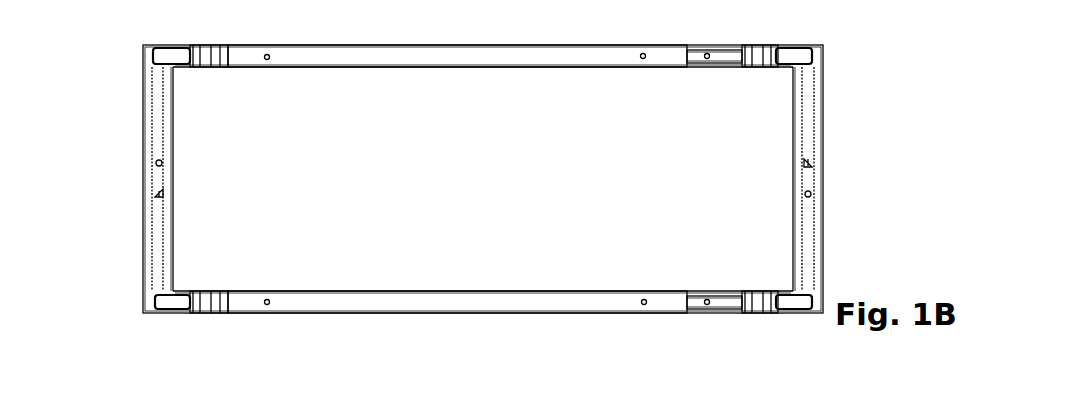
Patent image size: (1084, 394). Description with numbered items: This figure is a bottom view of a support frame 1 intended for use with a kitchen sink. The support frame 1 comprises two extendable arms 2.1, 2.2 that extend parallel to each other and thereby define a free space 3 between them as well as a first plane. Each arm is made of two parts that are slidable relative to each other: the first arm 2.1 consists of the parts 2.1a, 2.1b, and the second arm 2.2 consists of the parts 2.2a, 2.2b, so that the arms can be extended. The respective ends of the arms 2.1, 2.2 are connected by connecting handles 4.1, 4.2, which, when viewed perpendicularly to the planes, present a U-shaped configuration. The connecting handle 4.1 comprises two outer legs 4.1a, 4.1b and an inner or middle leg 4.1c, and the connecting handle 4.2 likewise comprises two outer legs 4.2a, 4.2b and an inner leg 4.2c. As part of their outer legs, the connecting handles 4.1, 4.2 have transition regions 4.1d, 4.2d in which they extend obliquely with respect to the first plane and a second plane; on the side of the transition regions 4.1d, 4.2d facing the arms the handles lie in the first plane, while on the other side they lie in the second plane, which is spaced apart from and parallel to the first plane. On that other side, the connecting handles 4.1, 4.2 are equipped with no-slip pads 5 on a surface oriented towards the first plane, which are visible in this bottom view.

The support frame 1 is at (506, 179).
The free space 3 is at (381, 126).
The no-slip pads 5 is at (160, 56).
The extendable arm 2.1 is at (485, 114).
The arm part 2.1a is at (520, 67).
The arm part 2.1b is at (707, 67).
The extendable arm 2.2 is at (485, 254).
The arm part 2.2a is at (506, 291).
The arm part 2.2b is at (702, 297).
The connecting handle 4.1 is at (206, 181).
The outer leg 4.1a is at (185, 46).
The outer leg 4.1b is at (178, 310).
The inner leg 4.1c is at (168, 176).
The transition region 4.1d is at (208, 62).
The connecting handle 4.2 is at (772, 176).
The outer leg 4.2a is at (794, 50).
The outer leg 4.2b is at (798, 310).
The inner leg 4.2c is at (803, 176).
The transition region 4.2d is at (756, 62).